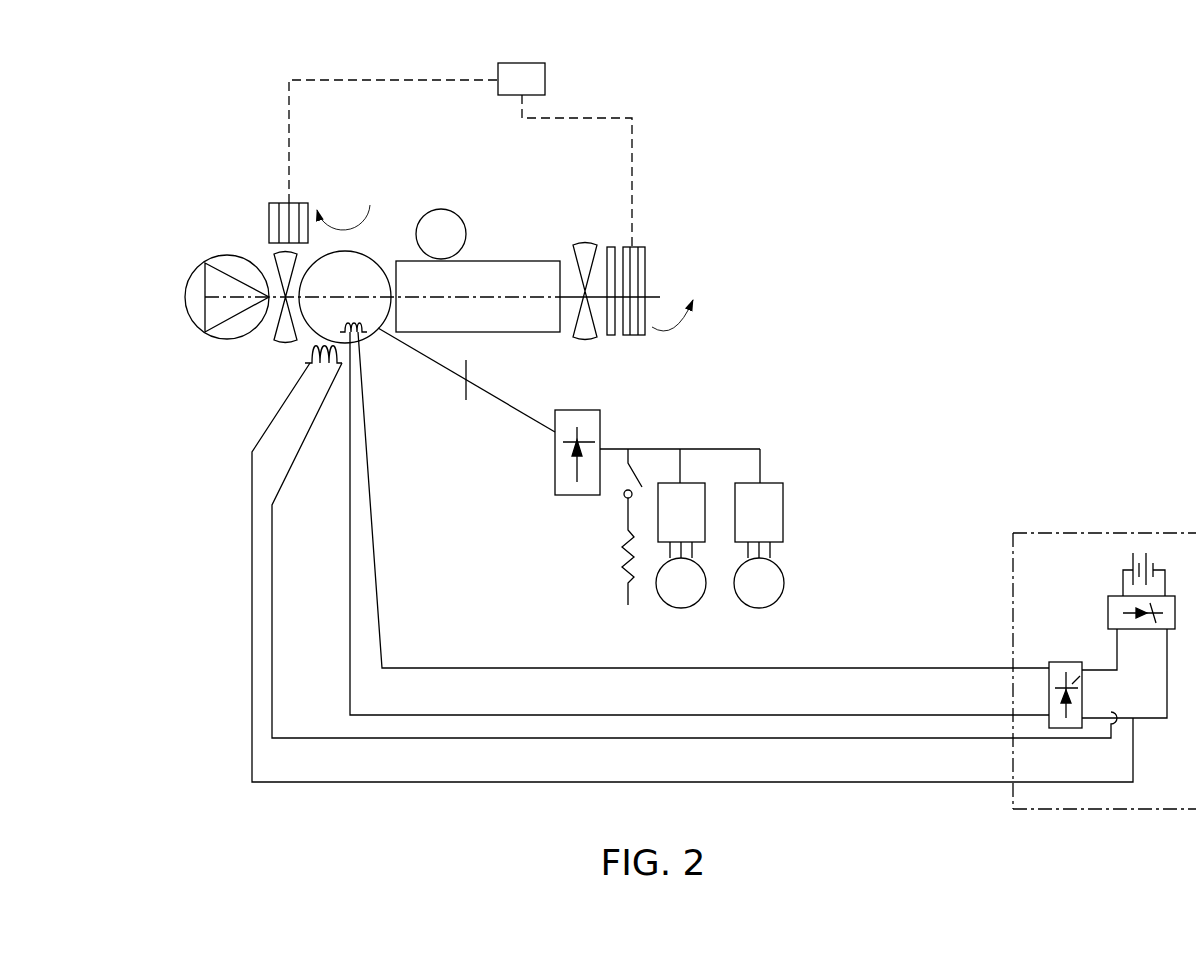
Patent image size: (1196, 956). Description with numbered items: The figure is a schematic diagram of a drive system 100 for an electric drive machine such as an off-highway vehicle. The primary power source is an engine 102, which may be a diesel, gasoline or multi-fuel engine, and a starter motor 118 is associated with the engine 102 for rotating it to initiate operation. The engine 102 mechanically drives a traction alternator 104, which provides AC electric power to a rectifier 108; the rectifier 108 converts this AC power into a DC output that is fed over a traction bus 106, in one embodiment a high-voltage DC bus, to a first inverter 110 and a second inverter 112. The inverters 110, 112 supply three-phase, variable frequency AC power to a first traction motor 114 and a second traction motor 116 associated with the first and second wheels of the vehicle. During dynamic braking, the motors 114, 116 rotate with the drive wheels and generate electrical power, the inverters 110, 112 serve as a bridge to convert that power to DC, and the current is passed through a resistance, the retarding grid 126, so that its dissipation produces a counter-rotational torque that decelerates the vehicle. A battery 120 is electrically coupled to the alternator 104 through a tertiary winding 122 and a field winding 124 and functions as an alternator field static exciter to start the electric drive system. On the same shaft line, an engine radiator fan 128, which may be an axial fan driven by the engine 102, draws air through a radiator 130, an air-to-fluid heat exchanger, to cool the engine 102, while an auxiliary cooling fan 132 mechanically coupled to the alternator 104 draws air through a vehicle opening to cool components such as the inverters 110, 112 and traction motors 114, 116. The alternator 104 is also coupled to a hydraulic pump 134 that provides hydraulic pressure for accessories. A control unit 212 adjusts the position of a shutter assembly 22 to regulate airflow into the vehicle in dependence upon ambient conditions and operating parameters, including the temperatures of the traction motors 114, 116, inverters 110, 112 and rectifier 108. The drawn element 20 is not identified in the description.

The drive system 100 is at (798, 117).
The control unit 212 is at (545, 78).
The shutter assembly 22 is at (272, 203).
The hydraulic pump 134 is at (185, 292).
The auxiliary cooling fan 132 is at (274, 254).
The traction alternator 104 is at (378, 264).
The starter motor 118 is at (441, 209).
The engine 102 is at (503, 261).
The engine radiator fan 128 is at (580, 243).
The radiator 130 is at (610, 247).
The transmission 20 is at (645, 262).
The rectifier 108 is at (575, 410).
The traction bus 106 is at (632, 430).
The retarding grid 126 is at (612, 558).
The first inverter 110 is at (690, 483).
The second inverter 112 is at (783, 510).
The first traction motor 114 is at (681, 608).
The second traction motor 116 is at (784, 582).
The tertiary winding 122 is at (387, 510).
The field winding 124 is at (262, 400).
The battery 120 is at (1135, 533).